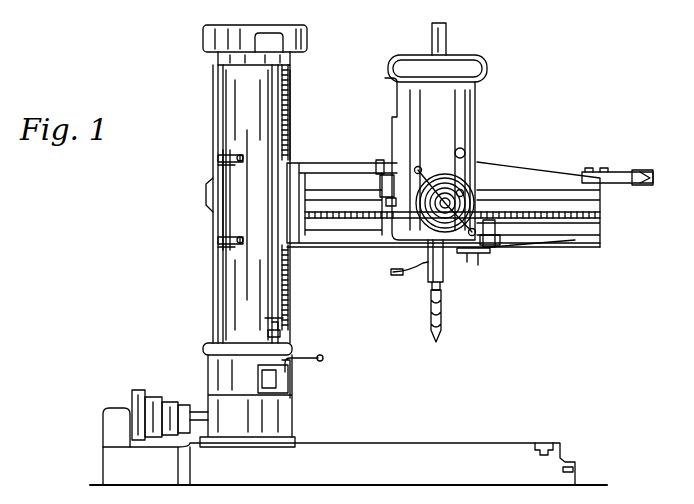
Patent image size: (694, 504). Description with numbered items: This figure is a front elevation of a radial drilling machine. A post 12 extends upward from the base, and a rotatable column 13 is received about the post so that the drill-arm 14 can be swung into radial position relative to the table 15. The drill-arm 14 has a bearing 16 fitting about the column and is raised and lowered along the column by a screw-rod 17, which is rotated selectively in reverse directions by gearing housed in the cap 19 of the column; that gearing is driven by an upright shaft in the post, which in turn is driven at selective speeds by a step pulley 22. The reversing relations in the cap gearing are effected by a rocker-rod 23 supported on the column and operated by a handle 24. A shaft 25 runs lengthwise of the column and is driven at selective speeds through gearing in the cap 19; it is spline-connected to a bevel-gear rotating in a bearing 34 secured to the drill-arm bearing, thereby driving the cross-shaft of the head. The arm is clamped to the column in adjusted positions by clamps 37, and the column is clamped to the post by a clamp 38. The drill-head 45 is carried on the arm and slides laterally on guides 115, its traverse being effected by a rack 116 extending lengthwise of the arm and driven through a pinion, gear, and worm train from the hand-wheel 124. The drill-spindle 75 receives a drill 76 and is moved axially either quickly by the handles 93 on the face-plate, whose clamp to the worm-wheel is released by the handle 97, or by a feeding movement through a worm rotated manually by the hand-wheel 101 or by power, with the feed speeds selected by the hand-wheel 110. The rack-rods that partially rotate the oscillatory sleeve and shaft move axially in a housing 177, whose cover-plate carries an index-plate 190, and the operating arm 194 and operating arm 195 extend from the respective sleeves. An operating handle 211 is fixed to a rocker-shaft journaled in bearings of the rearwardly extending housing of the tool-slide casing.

The post 12 is at (293, 415).
The column 13 is at (237, 268).
The drill-arm 14 is at (379, 256).
The table 15 is at (457, 445).
The bearing 16 is at (230, 214).
The screw-rod 17 is at (290, 111).
The cap 19 is at (213, 53).
The step pulley 22 is at (144, 394).
The rocker-rod 23 is at (285, 303).
The handle 24 is at (280, 329).
The shaft 25 is at (213, 107).
The bearing 34 is at (208, 203).
The clamps 37 is at (218, 163).
The clamp 38 is at (290, 380).
The drill-head 45 is at (491, 120).
The drill-spindle 75 is at (447, 42).
The drill 76 is at (443, 311).
The handles 93 is at (420, 166).
The handle 97 is at (463, 191).
The hand-wheel 101 is at (478, 258).
The hand-wheel 110 is at (465, 152).
The guides 115 is at (597, 227).
The rack 116 is at (587, 222).
The hand-wheel 124 is at (500, 243).
The housing 177 is at (393, 125).
The index-plate 190 is at (380, 167).
The operating arm 194 is at (378, 172).
The operating arm 195 is at (389, 217).
The operating handle 211 is at (394, 276).